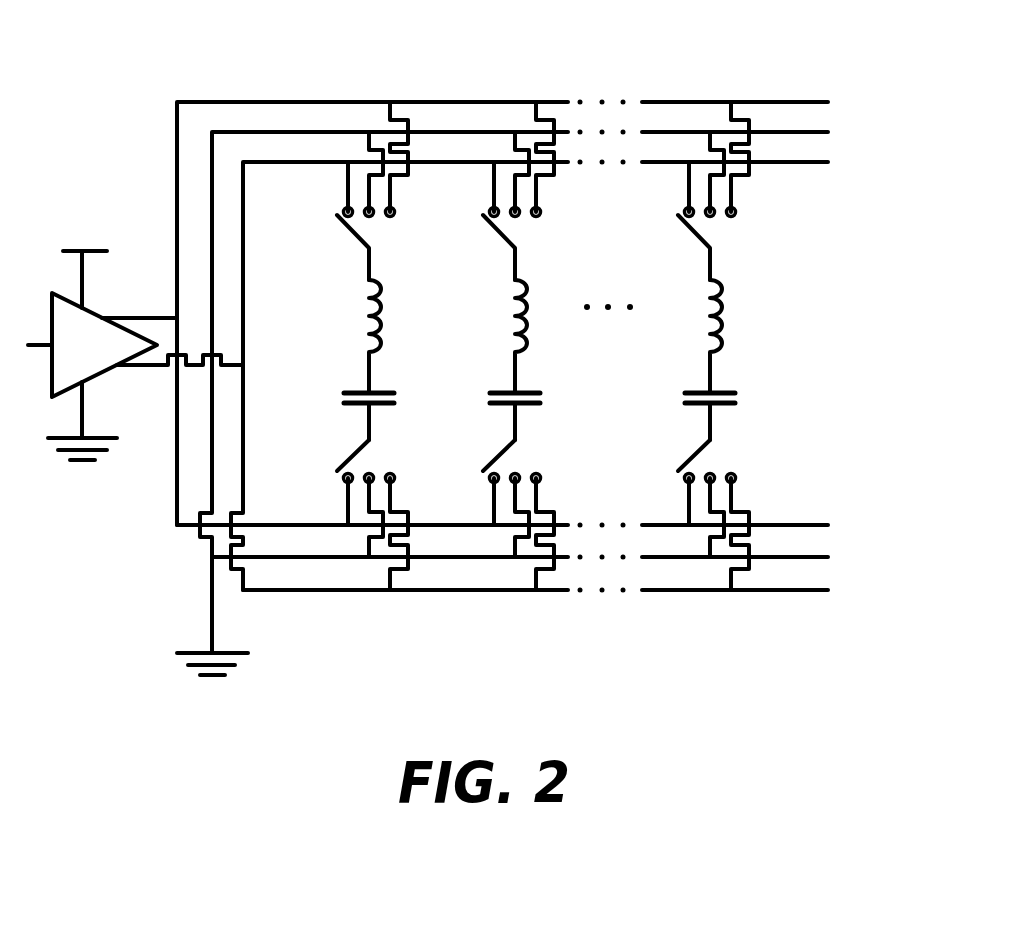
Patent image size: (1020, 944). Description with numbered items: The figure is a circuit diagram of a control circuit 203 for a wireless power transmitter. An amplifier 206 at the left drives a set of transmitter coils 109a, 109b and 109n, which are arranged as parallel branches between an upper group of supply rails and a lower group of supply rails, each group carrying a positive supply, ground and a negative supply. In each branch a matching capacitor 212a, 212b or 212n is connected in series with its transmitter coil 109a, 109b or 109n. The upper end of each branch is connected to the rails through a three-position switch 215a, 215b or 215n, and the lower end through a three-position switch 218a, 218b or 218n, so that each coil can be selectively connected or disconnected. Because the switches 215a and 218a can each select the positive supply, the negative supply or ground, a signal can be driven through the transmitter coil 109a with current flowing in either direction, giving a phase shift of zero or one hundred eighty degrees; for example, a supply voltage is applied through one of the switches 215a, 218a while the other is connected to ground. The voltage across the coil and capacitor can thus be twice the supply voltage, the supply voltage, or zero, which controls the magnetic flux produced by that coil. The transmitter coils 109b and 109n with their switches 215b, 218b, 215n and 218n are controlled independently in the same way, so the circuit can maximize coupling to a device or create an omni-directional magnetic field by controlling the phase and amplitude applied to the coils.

The control circuit 203 is at (267, 51).
The amplifier 206 is at (67, 328).
The three-position switch 215a is at (387, 233).
The three-position switch 215b is at (533, 233).
The three-position switch 215n is at (728, 233).
The transmitter coil 109a is at (391, 281).
The transmitter coil 109b is at (537, 281).
The transmitter coil 109n is at (732, 281).
The matching capacitor 212a is at (384, 393).
The matching capacitor 212b is at (530, 393).
The matching capacitor 212n is at (725, 393).
The three-position switch 218a is at (389, 456).
The three-position switch 218b is at (535, 456).
The three-position switch 218n is at (730, 456).